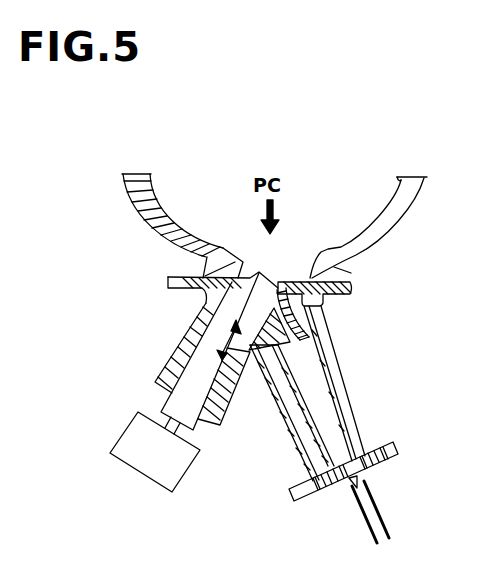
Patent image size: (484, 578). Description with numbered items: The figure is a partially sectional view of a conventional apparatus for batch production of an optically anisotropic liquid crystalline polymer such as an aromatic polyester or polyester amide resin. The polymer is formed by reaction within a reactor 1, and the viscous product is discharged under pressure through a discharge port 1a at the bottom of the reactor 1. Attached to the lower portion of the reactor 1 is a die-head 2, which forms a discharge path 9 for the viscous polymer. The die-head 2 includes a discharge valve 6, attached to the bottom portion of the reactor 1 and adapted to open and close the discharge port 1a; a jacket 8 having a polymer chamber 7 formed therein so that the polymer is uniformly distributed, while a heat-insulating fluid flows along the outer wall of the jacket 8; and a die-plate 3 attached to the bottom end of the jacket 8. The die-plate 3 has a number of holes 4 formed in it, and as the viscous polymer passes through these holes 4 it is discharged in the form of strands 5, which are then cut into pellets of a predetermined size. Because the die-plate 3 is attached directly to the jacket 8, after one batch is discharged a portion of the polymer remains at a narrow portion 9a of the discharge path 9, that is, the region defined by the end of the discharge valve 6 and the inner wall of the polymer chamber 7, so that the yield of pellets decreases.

The reactor 1 is at (417, 193).
The discharge port 1a is at (231, 277).
The die-head 2 is at (362, 361).
The die-plate 3 is at (388, 468).
The holes 4 is at (353, 497).
The strands 5 is at (388, 526).
The discharge valve 6 is at (182, 345).
The polymer chamber 7 is at (327, 399).
The jacket 8 is at (326, 333).
The discharge path 9 is at (288, 412).
The narrow portion 9a is at (303, 308).